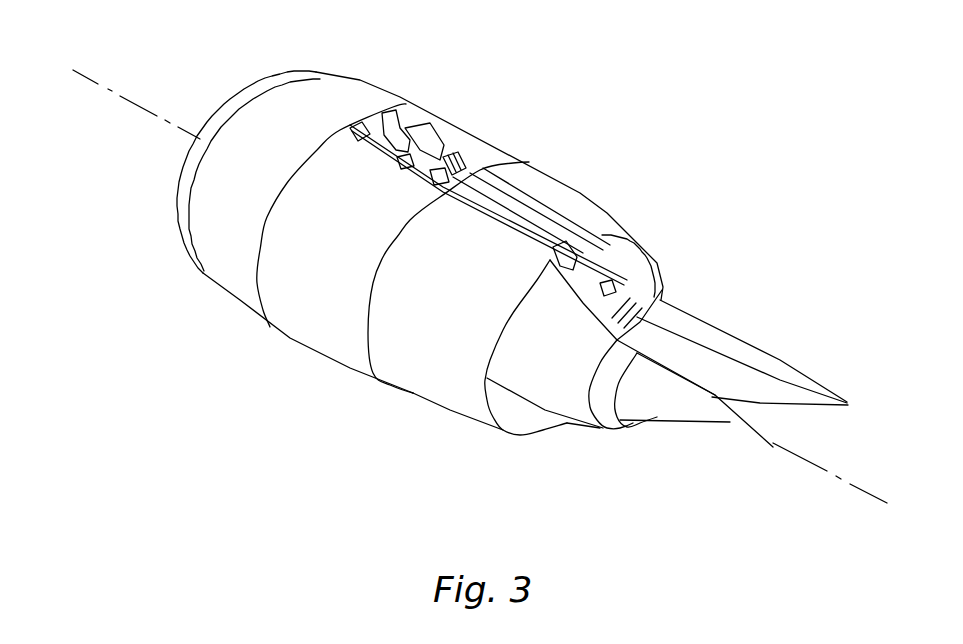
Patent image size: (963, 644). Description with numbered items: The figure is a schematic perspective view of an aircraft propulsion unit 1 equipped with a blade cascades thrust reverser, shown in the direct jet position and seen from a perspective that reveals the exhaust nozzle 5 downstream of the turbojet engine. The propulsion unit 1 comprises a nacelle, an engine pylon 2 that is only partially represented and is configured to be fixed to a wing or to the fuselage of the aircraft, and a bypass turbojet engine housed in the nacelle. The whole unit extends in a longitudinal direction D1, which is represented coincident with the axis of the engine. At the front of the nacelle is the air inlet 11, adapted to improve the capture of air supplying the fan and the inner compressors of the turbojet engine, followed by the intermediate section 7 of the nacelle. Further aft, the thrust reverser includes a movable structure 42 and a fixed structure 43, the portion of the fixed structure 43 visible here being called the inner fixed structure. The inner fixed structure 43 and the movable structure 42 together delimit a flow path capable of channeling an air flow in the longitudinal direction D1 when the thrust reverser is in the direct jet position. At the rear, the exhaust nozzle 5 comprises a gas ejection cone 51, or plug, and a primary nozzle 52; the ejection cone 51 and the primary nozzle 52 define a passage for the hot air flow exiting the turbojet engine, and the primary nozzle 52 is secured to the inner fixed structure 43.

The aircraft propulsion unit 1 is at (504, 98).
The engine pylon 2 is at (760, 363).
The exhaust nozzle 5 is at (668, 433).
The intermediate section 7 is at (307, 350).
The air inlet 11 is at (247, 87).
The movable structure 42 is at (430, 387).
The fixed structure 43 is at (533, 383).
The gas ejection cone 51 is at (696, 419).
The primary nozzle 52 is at (610, 417).
The longitudinal direction D1 is at (90, 70).